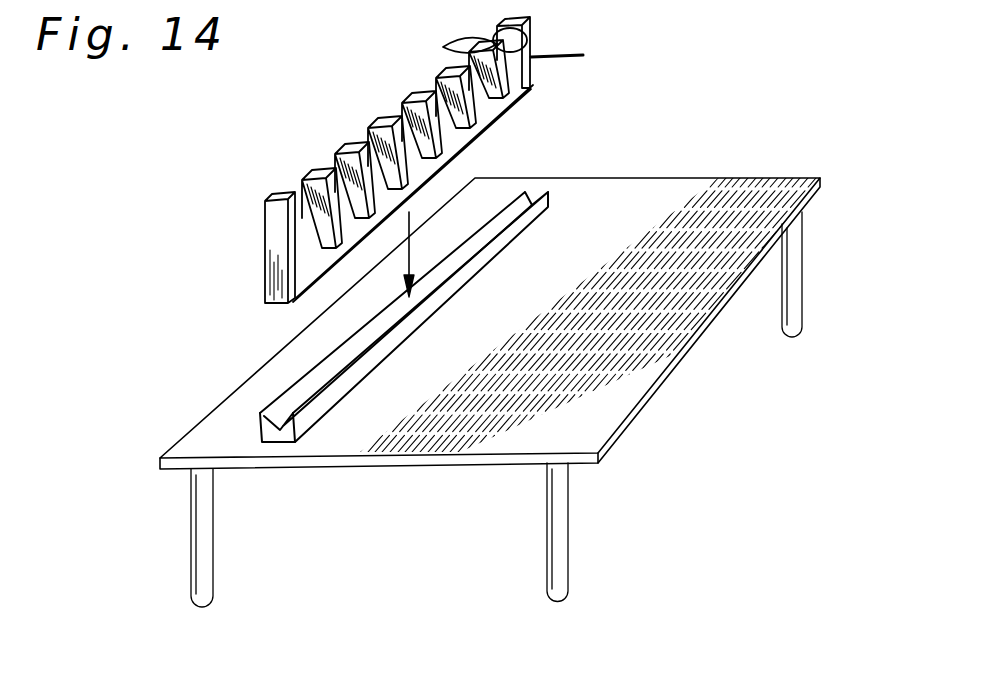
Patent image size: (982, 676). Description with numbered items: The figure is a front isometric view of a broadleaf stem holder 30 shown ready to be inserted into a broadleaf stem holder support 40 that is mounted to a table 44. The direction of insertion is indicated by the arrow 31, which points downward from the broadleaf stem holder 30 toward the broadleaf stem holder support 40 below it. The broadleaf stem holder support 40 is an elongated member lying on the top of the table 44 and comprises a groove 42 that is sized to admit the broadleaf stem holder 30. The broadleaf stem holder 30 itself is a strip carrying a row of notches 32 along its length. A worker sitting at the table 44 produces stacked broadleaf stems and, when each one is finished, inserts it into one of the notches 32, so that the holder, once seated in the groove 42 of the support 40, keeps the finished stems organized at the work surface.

The broadleaf stem holder 30 is at (272, 230).
The arrow 31 is at (410, 255).
The notch 32 is at (373, 138).
The broadleaf stem holder support 40 is at (510, 233).
The groove 42 is at (279, 434).
The table 44 is at (600, 402).